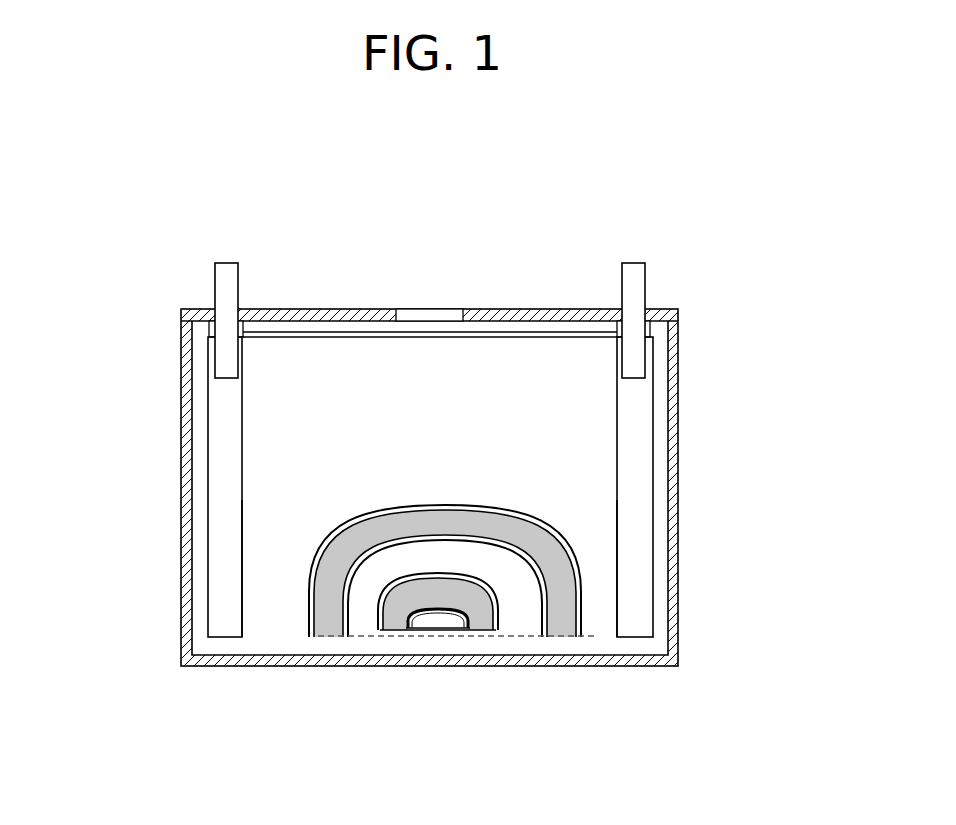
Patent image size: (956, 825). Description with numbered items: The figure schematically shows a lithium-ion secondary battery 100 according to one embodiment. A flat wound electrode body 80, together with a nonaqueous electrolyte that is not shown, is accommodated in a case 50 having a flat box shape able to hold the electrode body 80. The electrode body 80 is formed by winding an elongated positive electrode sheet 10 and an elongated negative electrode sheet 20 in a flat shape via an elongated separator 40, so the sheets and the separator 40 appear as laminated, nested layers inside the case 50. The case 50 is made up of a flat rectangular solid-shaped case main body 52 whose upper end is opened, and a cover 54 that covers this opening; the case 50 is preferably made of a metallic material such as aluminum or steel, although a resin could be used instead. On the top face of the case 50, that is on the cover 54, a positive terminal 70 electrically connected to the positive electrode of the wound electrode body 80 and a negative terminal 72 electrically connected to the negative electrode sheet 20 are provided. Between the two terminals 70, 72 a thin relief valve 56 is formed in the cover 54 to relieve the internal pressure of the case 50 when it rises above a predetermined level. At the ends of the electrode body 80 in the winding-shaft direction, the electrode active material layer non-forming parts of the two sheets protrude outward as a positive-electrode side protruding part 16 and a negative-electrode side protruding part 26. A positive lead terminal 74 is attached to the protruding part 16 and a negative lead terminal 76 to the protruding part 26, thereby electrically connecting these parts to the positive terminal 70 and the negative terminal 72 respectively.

The lithium-ion secondary battery 100 is at (678, 198).
The positive electrode sheet 10 is at (207, 446).
The positive-electrode side protruding part 16 is at (223, 557).
The negative electrode sheet 20 is at (644, 451).
The negative-electrode side protruding part 26 is at (640, 580).
The separator 40 is at (273, 618).
The case 50 is at (680, 485).
The case main body 52 is at (672, 617).
The cover 54 is at (548, 316).
The relief valve 56 is at (425, 315).
The positive terminal 70 is at (226, 270).
The negative terminal 72 is at (633, 276).
The positive lead terminal 74 is at (223, 366).
The negative lead terminal 76 is at (632, 365).
The wound electrode body 80 is at (595, 641).